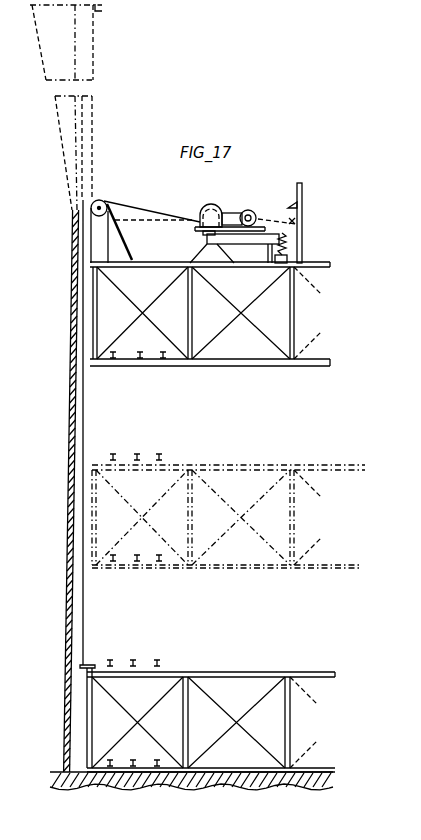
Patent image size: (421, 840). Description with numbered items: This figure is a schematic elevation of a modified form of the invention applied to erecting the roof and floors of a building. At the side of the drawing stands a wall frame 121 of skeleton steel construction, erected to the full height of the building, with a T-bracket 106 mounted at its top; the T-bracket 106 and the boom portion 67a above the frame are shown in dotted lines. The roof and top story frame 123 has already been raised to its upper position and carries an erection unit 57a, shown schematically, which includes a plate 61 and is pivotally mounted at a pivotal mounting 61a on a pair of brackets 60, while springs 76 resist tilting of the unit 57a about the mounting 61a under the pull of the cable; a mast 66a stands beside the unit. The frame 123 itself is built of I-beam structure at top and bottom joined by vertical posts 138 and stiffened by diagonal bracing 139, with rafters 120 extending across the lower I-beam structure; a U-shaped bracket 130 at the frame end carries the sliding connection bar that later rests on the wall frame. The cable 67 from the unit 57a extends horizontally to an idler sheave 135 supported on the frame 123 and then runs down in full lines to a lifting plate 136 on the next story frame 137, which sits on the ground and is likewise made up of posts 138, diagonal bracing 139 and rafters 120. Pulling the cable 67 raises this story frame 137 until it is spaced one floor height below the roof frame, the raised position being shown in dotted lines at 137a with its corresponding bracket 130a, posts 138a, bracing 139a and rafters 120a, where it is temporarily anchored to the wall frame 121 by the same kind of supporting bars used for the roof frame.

The T-bracket 106 is at (103, 11).
The boom section 67a is at (94, 107).
The wall frame 121 is at (66, 581).
The cable 67 is at (157, 212).
The sheave 135 is at (105, 203).
The erection unit 57a is at (224, 203).
The plate 61 is at (245, 236).
The pivotal mounting 61a is at (203, 237).
The brackets 60 is at (200, 254).
The springs 76 is at (298, 221).
The mast 66a is at (291, 202).
The roof and top story frame 123 is at (312, 262).
The U-shaped bracket 130 is at (97, 313).
The vertical posts 138 is at (295, 311).
The diagonal bracing 139 is at (213, 278).
The raised story frame position 137a is at (328, 472).
The end upright 130a is at (92, 511).
The upright 138a is at (292, 524).
The cross brace 139a is at (210, 540).
The rafters 120 is at (163, 360).
The clips 120a is at (145, 562).
The story frame 137 is at (233, 672).
The lifting plate 136 is at (88, 664).